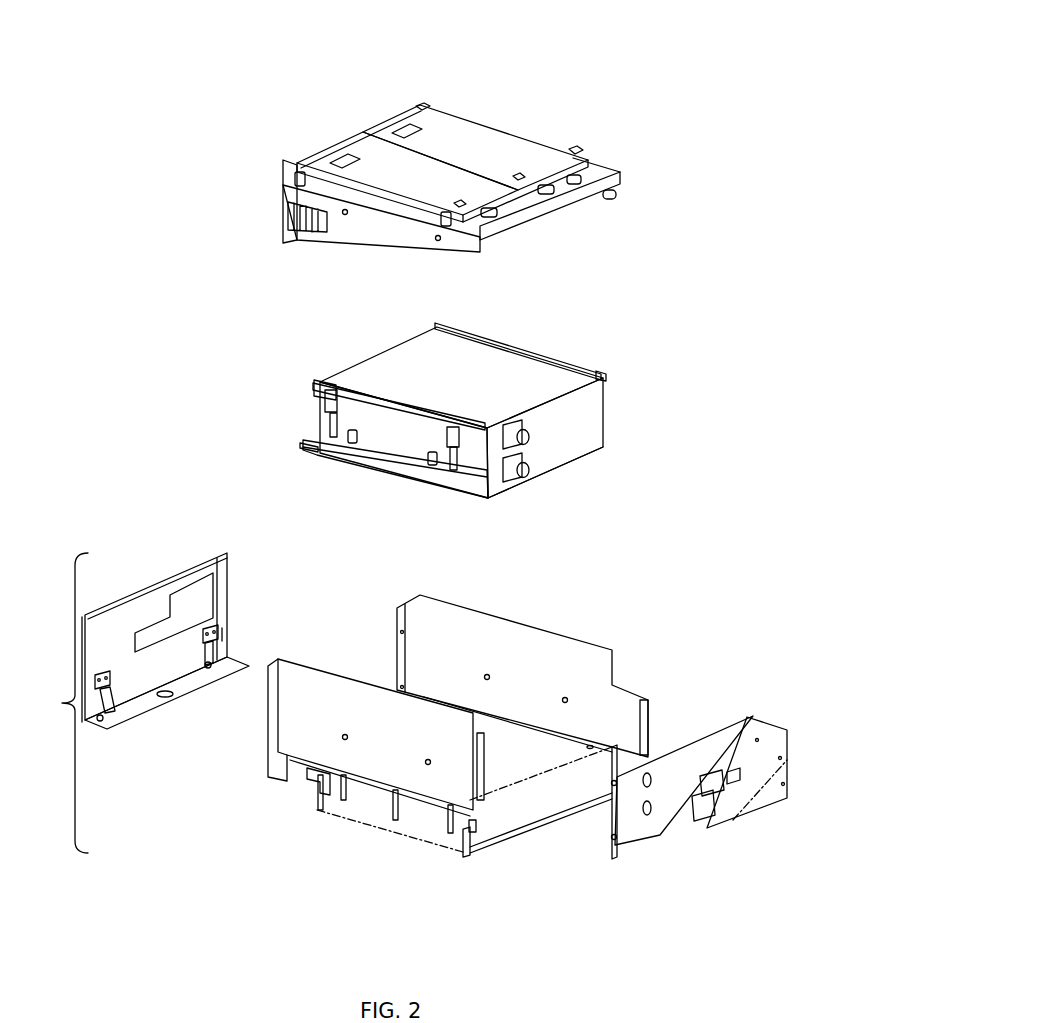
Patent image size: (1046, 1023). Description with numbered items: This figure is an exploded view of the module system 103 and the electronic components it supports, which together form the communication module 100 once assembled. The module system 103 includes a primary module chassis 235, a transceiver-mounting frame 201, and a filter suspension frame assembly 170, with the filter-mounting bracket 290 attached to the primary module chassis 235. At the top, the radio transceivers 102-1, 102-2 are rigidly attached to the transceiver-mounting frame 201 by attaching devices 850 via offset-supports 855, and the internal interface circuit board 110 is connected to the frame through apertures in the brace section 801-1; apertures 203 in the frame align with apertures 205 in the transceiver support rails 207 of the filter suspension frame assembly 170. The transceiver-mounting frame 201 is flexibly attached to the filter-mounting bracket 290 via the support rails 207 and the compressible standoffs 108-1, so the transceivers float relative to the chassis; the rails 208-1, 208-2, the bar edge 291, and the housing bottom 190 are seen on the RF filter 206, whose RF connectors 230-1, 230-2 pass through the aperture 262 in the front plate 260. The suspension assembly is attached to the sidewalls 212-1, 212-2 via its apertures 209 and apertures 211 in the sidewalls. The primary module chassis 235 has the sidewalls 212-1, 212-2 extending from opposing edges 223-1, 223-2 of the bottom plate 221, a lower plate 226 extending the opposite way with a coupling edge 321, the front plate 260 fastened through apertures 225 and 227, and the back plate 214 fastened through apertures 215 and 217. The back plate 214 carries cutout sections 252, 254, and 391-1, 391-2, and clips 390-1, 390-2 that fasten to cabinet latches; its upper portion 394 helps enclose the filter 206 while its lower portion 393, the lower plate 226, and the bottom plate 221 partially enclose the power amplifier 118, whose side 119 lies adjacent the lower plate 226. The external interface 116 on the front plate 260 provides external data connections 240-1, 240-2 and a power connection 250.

The communication module 100 is at (684, 115).
The internal interface circuit board 110 is at (293, 158).
The radio transceiver 102-1 is at (372, 155).
The radio transceiver 102-2 is at (473, 127).
The attaching device 850 is at (420, 105).
The offset-supports 855 is at (298, 178).
The brace section 801-1 is at (288, 212).
The transceiver-mounting frame 201 is at (550, 212).
The apertures 203 is at (345, 214).
The RF filter 206 is at (533, 390).
The first rail 208-1 is at (363, 397).
The second rail 208-2 is at (510, 345).
The transceiver support rails 207 is at (585, 370).
The apertures 205 is at (345, 400).
The compressible standoff 108-1 is at (453, 453).
The apertures 209 is at (353, 438).
The filter-mounting bracket 290 is at (385, 463).
The bar edge 291 is at (377, 443).
The filter suspension frame assembly 170 is at (317, 447).
The housing bottom 190 is at (593, 448).
The RF connector 230-1 is at (528, 440).
The RF connector 230-2 is at (527, 475).
The upper portion of the back plate 394 is at (240, 559).
The module system 103 is at (268, 826).
The primary module chassis 235 is at (50, 703).
The back plate 214 is at (115, 608).
The apertures 215 is at (228, 578).
The cutout section 252 is at (195, 587).
The lower portion of the back plate 393 is at (218, 684).
The cutout section 254 is at (170, 699).
The clip 390-1 is at (103, 708).
The clip 390-2 is at (219, 648).
The aperture 391-1 is at (100, 720).
The aperture 391-2 is at (206, 665).
The sidewall 212-1 is at (266, 748).
The edge of the bottom plate 223-1 is at (338, 793).
The apertures 211 is at (345, 735).
The sidewall 212-2 is at (518, 633).
The apertures 217 is at (405, 632).
The edge of the bottom plate 223-2 is at (513, 717).
The apertures 225 is at (482, 741).
The bottom plate 221 is at (572, 746).
The power amplifier 118 is at (387, 813).
The side of the power amplifier 119 is at (470, 852).
The coupling edge 321 is at (513, 841).
The lower plate 226 is at (473, 828).
The apertures 227 is at (612, 787).
The front plate 260 is at (668, 818).
The aperture 262 is at (652, 770).
The external interface 116 is at (763, 722).
The power connection 250 is at (730, 783).
The external data connection 240-2 is at (723, 795).
The external data connection 240-1 is at (713, 806).